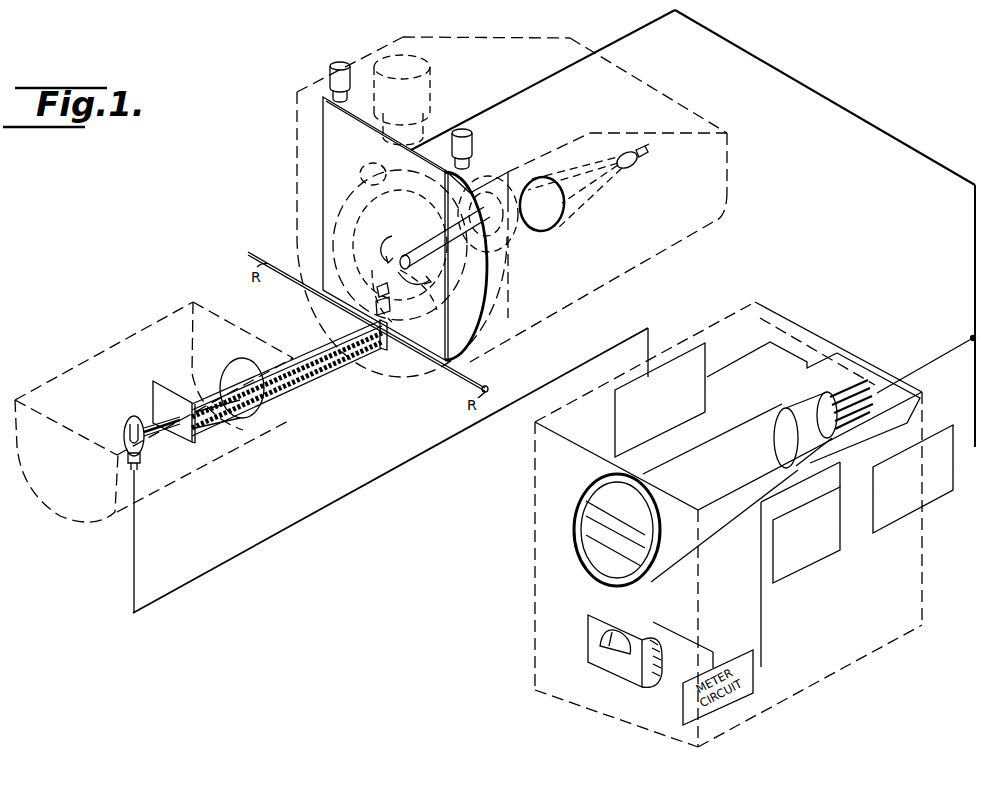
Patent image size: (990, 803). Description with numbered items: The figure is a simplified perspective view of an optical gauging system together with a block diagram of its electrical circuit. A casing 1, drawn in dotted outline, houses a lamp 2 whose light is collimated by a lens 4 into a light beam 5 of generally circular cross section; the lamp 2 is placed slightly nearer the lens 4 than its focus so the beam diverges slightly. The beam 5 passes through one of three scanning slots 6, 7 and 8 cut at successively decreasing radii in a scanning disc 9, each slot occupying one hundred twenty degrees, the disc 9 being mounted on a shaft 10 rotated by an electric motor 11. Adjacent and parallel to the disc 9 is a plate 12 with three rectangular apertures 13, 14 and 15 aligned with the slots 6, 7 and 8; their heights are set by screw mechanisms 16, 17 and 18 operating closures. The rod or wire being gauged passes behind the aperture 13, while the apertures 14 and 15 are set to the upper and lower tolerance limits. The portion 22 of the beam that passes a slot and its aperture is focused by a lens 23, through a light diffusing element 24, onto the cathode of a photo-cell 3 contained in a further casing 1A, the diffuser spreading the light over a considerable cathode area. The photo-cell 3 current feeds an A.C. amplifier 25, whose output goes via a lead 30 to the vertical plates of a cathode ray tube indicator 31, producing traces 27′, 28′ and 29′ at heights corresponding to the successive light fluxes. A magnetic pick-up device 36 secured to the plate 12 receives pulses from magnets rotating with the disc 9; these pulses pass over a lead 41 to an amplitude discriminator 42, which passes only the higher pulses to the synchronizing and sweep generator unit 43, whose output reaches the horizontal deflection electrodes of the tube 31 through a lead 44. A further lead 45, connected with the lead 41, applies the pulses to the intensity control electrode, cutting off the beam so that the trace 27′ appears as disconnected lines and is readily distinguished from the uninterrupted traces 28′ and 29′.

The casing 1 is at (492, 47).
The further casing 1A is at (119, 352).
The lamp 2 is at (636, 167).
The photo-cell 3 is at (126, 424).
The lens 4 is at (563, 220).
The light beam 5 is at (512, 253).
The scanning slot 6 is at (352, 192).
The scanning slot 7 is at (465, 299).
The scanning slot 8 is at (412, 302).
The scanning disc 9 is at (390, 225).
The shaft 10 is at (479, 238).
The electric motor 11 is at (504, 228).
The plate 12 is at (404, 379).
The rectangular aperture 13 is at (387, 340).
The rectangular aperture 14 is at (392, 315).
The rectangular aperture 15 is at (380, 279).
The screw mechanism 16 is at (338, 60).
The screw mechanism 17 is at (432, 77).
The screw mechanism 18 is at (474, 136).
The light beam portion 22 is at (317, 367).
The lens 23 is at (235, 414).
The light diffusing element 24 is at (170, 383).
The A.C. amplifier 25 is at (612, 427).
The trace 27′ is at (586, 520).
The trace 28′ is at (586, 504).
The trace 29′ is at (602, 546).
The lead 30 is at (720, 407).
The cathode ray tube indicator 31 is at (580, 496).
The magnetic pick-up device 36 is at (370, 166).
The lead 41 is at (906, 150).
The amplitude discriminator 42 is at (925, 509).
The synchronizing and sweep generator unit 43 is at (840, 535).
The lead 44 is at (928, 410).
The further lead 45 is at (878, 392).